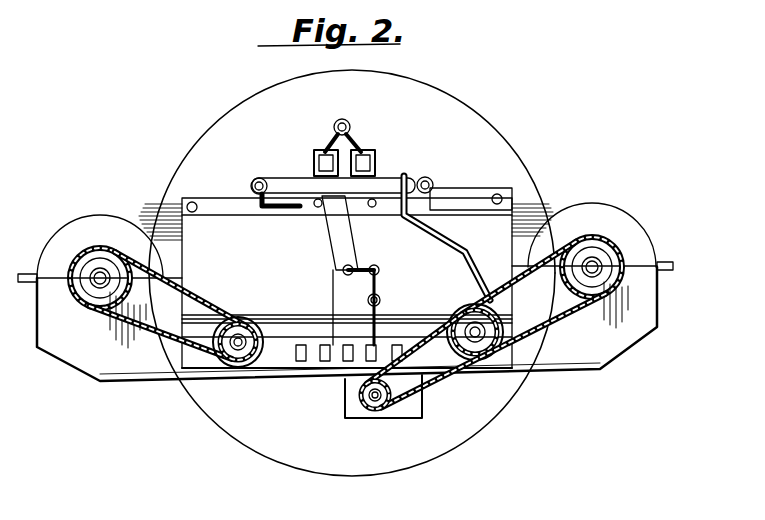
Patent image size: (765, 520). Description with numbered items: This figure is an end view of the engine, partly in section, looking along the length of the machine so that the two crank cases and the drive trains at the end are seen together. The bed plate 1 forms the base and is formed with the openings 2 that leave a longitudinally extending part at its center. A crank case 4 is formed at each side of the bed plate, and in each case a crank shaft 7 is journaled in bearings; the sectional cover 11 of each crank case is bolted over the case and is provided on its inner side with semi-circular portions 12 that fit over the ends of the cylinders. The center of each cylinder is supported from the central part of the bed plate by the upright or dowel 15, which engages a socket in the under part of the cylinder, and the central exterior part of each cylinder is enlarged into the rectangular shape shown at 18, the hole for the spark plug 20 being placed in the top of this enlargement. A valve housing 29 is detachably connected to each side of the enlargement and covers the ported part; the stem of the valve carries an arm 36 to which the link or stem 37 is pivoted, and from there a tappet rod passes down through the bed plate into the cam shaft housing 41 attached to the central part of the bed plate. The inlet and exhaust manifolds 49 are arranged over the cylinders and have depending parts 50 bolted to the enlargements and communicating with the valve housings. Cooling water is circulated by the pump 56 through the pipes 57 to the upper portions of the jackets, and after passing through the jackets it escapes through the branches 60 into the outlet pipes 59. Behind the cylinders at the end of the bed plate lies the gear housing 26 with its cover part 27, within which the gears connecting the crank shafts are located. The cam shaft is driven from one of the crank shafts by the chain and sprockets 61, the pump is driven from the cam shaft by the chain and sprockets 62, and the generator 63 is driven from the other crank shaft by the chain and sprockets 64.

The bed plate 1 is at (300, 377).
The openings 2 is at (283, 366).
The crank case 4 is at (45, 332).
The crank shaft 7 is at (99, 293).
The sectional cover 11 is at (78, 228).
The semi-circular portions 12 is at (160, 213).
The upright or dowel 15 is at (344, 362).
The enlargement 18 is at (380, 312).
The spark plug 20 is at (372, 195).
The housing 26 is at (333, 467).
The cover part 27 is at (441, 108).
The valve housing 29 is at (340, 293).
The arm 36 is at (372, 266).
The link or stem 37 is at (380, 300).
The cam shaft housing 41 is at (405, 416).
The inlet and exhaust manifolds 49 is at (360, 150).
The depending parts 50 is at (333, 232).
The pump 56 is at (496, 324).
The pipes 57 is at (290, 183).
The outlet pipes 59 is at (255, 184).
The branches 60 is at (278, 212).
The chain and sprockets 61 is at (538, 333).
The chain and sprockets 62 is at (420, 396).
The generator 63 is at (242, 322).
The chain and sprockets 64 is at (203, 305).